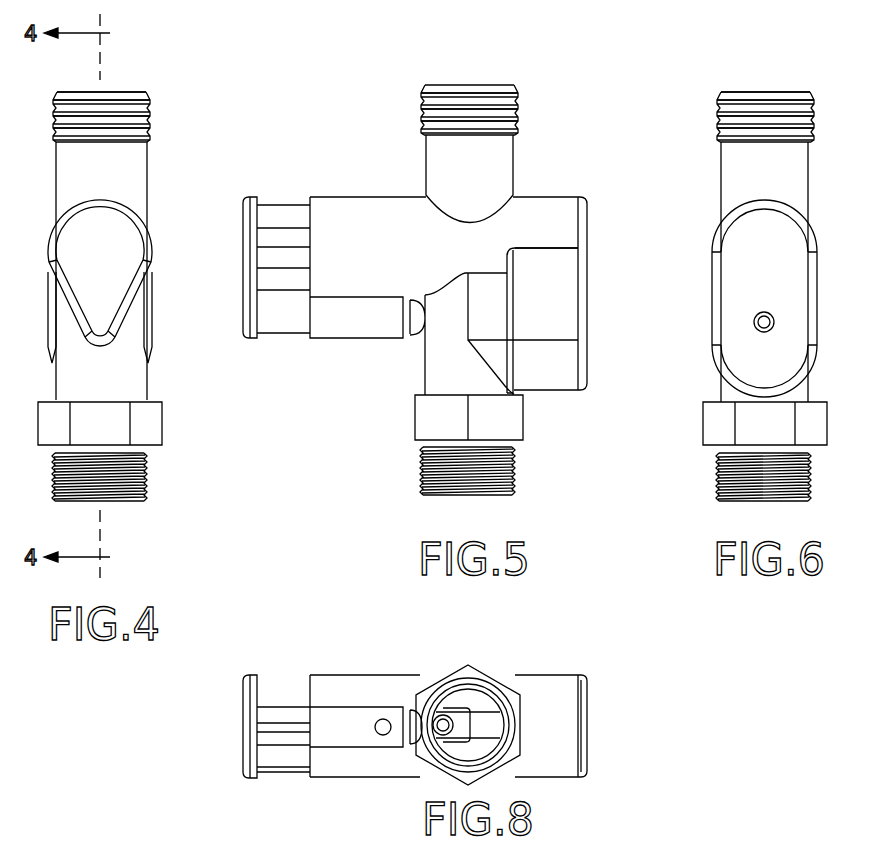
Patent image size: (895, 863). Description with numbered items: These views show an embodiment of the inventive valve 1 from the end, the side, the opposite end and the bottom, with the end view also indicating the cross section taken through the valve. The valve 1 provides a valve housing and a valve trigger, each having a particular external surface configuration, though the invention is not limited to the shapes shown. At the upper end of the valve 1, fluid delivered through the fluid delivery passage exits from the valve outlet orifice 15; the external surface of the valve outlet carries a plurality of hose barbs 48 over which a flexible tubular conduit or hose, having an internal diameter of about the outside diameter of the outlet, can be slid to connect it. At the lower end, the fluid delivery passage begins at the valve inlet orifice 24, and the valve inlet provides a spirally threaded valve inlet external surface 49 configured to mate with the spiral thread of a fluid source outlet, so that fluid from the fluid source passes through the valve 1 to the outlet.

In FIG. 4, the valve 1 is at (160, 200).
In FIG. 5, the valve 1 is at (582, 180).
In FIG. 6, the valve 1 is at (822, 272).
In FIG. 8, the valve 1 is at (587, 662).
In FIG. 4, the valve outlet orifice 15 is at (126, 88).
In FIG. 5, the valve outlet orifice 15 is at (444, 83).
In FIG. 6, the valve outlet orifice 15 is at (748, 88).
In FIG. 4, the hose barbs 48 is at (150, 97).
In FIG. 5, the hose barbs 48 is at (520, 106).
In FIG. 6, the hose barbs 48 is at (813, 118).
In FIG. 4, the valve inlet orifice 24 is at (128, 510).
In FIG. 5, the valve inlet orifice 24 is at (504, 500).
In FIG. 6, the valve inlet orifice 24 is at (804, 508).
In FIG. 8, the valve inlet orifice 24 is at (522, 765).
In FIG. 4, the valve inlet external surface 49 is at (184, 450).